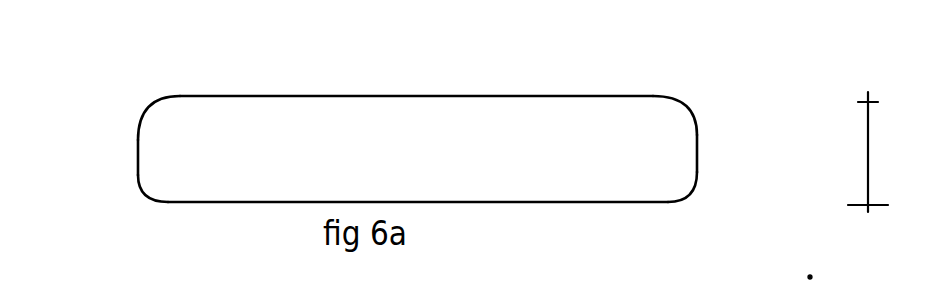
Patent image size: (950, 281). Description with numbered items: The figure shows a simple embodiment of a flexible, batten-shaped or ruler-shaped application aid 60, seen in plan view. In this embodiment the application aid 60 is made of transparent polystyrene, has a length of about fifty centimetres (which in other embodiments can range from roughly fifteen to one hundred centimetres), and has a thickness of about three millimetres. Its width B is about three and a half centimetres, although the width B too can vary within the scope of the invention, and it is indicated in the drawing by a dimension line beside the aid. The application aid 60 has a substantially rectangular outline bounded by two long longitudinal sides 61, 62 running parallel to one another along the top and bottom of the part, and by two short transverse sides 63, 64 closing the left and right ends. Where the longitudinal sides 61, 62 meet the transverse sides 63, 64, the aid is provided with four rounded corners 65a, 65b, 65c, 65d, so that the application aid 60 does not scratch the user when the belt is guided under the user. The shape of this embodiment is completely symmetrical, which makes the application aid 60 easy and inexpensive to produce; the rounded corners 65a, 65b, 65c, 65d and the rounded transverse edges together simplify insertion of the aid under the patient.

The application aid 60 is at (427, 140).
The longitudinal side 61 is at (452, 88).
The longitudinal side 62 is at (452, 203).
The transverse side 63 is at (137, 145).
The transverse side 64 is at (700, 138).
The rounded corner 65a is at (153, 97).
The rounded corner 65b is at (688, 92).
The rounded corner 65c is at (147, 208).
The rounded corner 65d is at (685, 212).
The width B is at (875, 152).